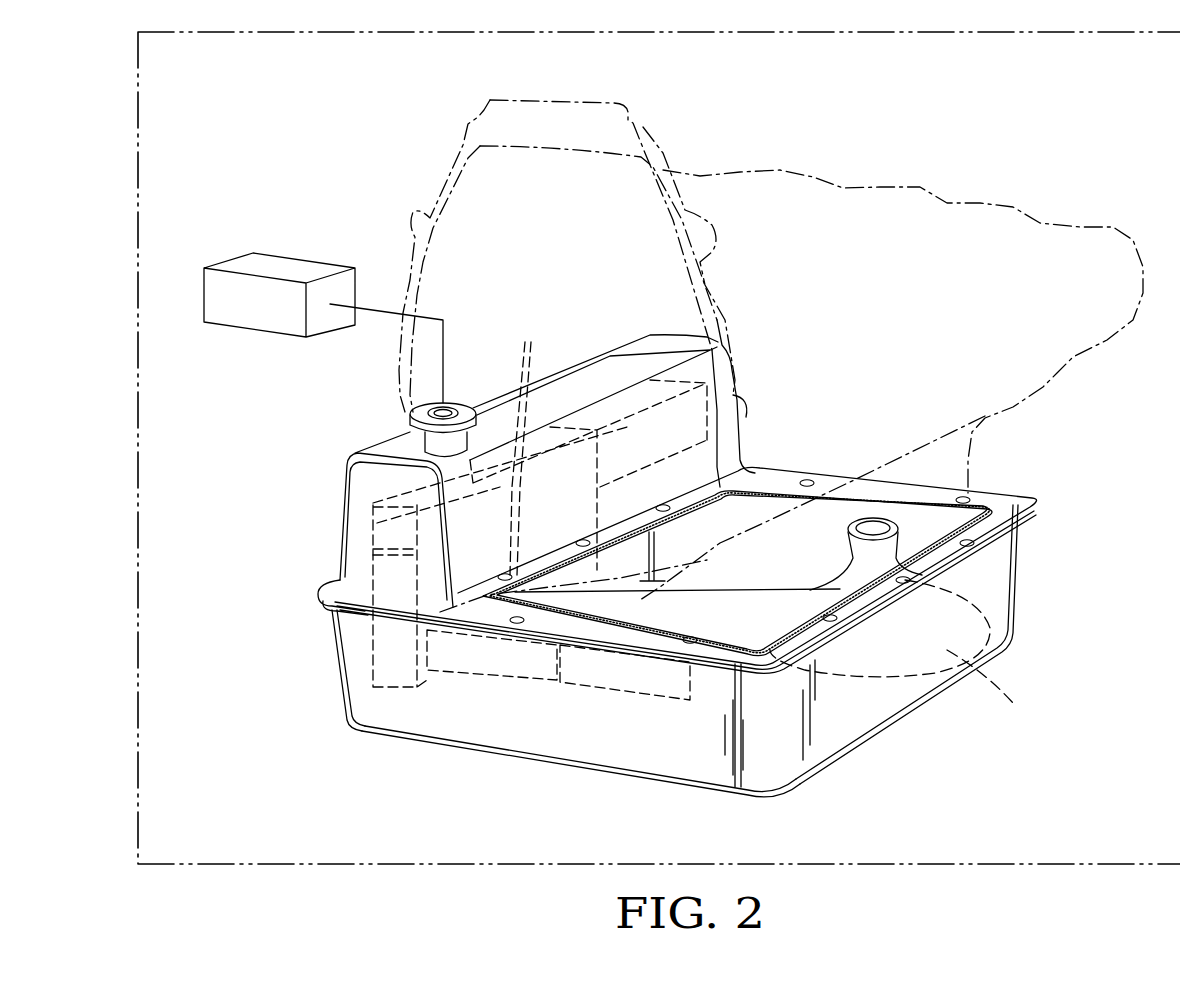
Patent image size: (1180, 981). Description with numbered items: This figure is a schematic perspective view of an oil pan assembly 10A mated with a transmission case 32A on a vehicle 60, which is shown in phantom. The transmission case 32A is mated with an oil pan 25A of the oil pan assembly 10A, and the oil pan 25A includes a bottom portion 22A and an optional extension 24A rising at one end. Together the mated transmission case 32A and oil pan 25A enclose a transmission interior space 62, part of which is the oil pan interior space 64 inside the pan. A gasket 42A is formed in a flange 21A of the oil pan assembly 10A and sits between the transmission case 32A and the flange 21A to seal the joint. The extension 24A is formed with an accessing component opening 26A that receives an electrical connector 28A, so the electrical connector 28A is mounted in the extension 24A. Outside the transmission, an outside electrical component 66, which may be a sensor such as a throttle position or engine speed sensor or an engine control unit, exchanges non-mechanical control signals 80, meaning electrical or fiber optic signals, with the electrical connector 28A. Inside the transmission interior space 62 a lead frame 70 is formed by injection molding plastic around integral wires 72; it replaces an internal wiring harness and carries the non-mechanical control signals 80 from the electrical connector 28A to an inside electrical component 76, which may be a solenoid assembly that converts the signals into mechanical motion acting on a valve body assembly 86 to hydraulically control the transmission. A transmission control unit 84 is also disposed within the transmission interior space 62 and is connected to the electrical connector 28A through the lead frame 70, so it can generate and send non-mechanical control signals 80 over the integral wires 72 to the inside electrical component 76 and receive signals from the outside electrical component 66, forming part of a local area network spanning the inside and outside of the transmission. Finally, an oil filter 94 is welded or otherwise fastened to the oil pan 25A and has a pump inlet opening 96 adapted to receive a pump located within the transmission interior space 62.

The oil pan assembly 10A is at (1028, 584).
The flange 21A is at (1040, 514).
The bottom portion 22A is at (547, 723).
The extension 24A is at (367, 481).
The oil pan 25A is at (357, 563).
The accessing component opening 26A is at (408, 431).
The electrical connector 28A is at (408, 427).
The transmission case 32A is at (468, 124).
The gasket 42A is at (995, 505).
The vehicle 60 is at (138, 124).
The transmission interior space 62 is at (797, 218).
The oil pan interior space 64 is at (765, 563).
The outside electrical component 66 is at (280, 268).
The lead frame 70 is at (373, 510).
The integral wires 72 is at (373, 555).
The inside electrical component 76 is at (510, 655).
The non-mechanical control signals 80 is at (387, 313).
The transmission control unit 84 is at (637, 437).
The valve body assembly 86 is at (650, 678).
The oil filter 94 is at (1013, 703).
The pump inlet opening 96 is at (878, 526).